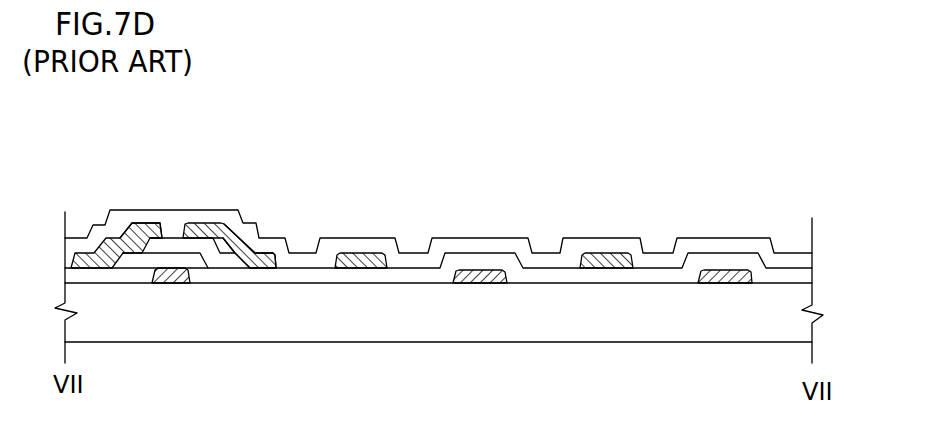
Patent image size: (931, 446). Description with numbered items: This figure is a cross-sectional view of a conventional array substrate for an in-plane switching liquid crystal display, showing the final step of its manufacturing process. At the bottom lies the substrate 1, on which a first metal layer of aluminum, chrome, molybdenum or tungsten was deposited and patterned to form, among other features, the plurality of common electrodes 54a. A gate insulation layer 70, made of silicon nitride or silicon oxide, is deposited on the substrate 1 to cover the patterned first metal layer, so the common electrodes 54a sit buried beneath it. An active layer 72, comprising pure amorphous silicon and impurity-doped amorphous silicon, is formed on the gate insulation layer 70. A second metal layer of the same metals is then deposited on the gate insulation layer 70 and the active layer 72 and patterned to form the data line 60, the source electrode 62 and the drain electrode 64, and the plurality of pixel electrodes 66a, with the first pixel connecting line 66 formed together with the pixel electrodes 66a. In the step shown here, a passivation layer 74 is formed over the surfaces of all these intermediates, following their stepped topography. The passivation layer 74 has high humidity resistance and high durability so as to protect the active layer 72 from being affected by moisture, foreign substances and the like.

The substrate 1 is at (443, 323).
The common electrode 54a is at (480, 270).
The data line 60 is at (87, 250).
The source electrode 62 is at (147, 223).
The drain electrode 64 is at (210, 223).
The first pixel connecting line 66 is at (262, 253).
The pixel electrode 66a is at (362, 253).
The gate insulation layer 70 is at (558, 278).
The active layer 72 is at (125, 263).
The passivation layer 74 is at (528, 238).